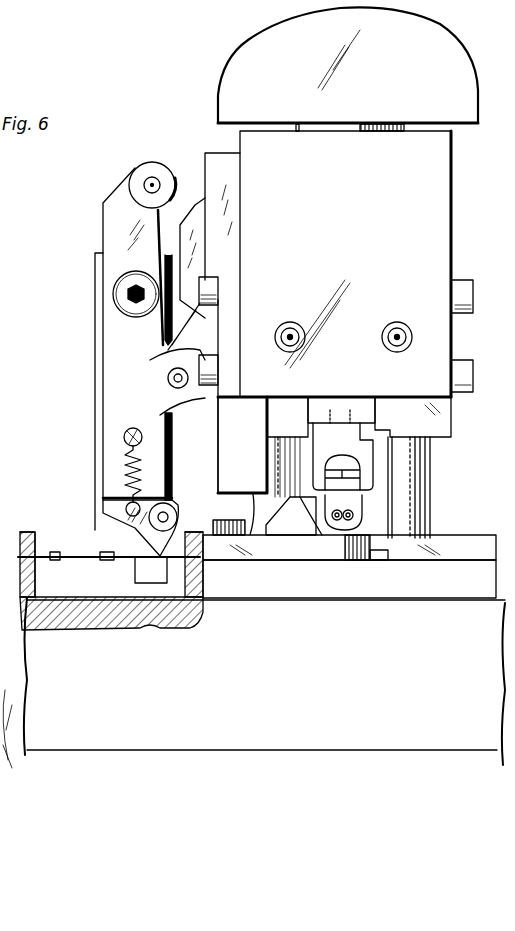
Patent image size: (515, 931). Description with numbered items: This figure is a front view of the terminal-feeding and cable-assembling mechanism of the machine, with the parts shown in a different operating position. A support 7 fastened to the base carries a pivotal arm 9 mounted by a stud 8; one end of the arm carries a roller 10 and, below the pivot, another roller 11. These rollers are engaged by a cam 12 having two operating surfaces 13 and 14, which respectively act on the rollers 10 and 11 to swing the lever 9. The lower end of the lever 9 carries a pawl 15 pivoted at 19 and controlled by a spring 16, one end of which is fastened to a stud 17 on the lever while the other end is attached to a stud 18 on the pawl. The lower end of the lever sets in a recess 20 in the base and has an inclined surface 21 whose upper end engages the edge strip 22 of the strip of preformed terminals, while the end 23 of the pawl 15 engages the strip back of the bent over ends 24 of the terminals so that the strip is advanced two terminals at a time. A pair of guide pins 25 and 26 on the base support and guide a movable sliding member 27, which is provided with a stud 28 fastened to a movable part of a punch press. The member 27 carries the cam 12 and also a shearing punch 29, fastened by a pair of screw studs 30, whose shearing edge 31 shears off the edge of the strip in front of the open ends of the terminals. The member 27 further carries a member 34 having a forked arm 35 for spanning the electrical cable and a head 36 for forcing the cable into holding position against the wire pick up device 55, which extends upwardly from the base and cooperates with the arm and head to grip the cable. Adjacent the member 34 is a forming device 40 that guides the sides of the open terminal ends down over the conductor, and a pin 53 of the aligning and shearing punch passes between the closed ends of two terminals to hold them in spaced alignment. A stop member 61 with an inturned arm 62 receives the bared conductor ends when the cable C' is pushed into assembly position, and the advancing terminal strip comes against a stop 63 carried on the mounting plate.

The support 7 is at (95, 318).
The stud 8 is at (112, 298).
The pivotal arm 9 is at (103, 227).
The roller 10 is at (170, 170).
The roller 11 is at (190, 398).
The cam 12 is at (197, 263).
The operating surface 13 is at (197, 200).
The operating surface 14 is at (210, 300).
The pawl 15 is at (112, 505).
The spring 16 is at (125, 462).
The stud 17 is at (124, 433).
The stud 18 is at (160, 508).
The pivot 19 is at (230, 494).
The recess 20 is at (25, 532).
The inclined surface 21 is at (118, 628).
The edge strip 22 is at (62, 532).
The end of the pawl 23 is at (160, 628).
The bent over ends 24 is at (170, 545).
The guide pin 25 is at (290, 440).
The guide pin 26 is at (415, 475).
The movable sliding member 27 is at (462, 259).
The stud 28 is at (388, 132).
The shearing punch 29 is at (252, 407).
The screw studs 30 is at (170, 342).
The shearing edge 31 is at (252, 494).
The member 34 is at (395, 352).
The forked arm 35 is at (350, 430).
The head 36 is at (372, 438).
The forming device 40 is at (372, 417).
The pin 53 is at (308, 530).
The wire pick up device 55 is at (343, 558).
The stop member 61 is at (289, 528).
The inturned arm 62 is at (305, 500).
The stop 63 is at (385, 555).
The cup C' is at (394, 507).